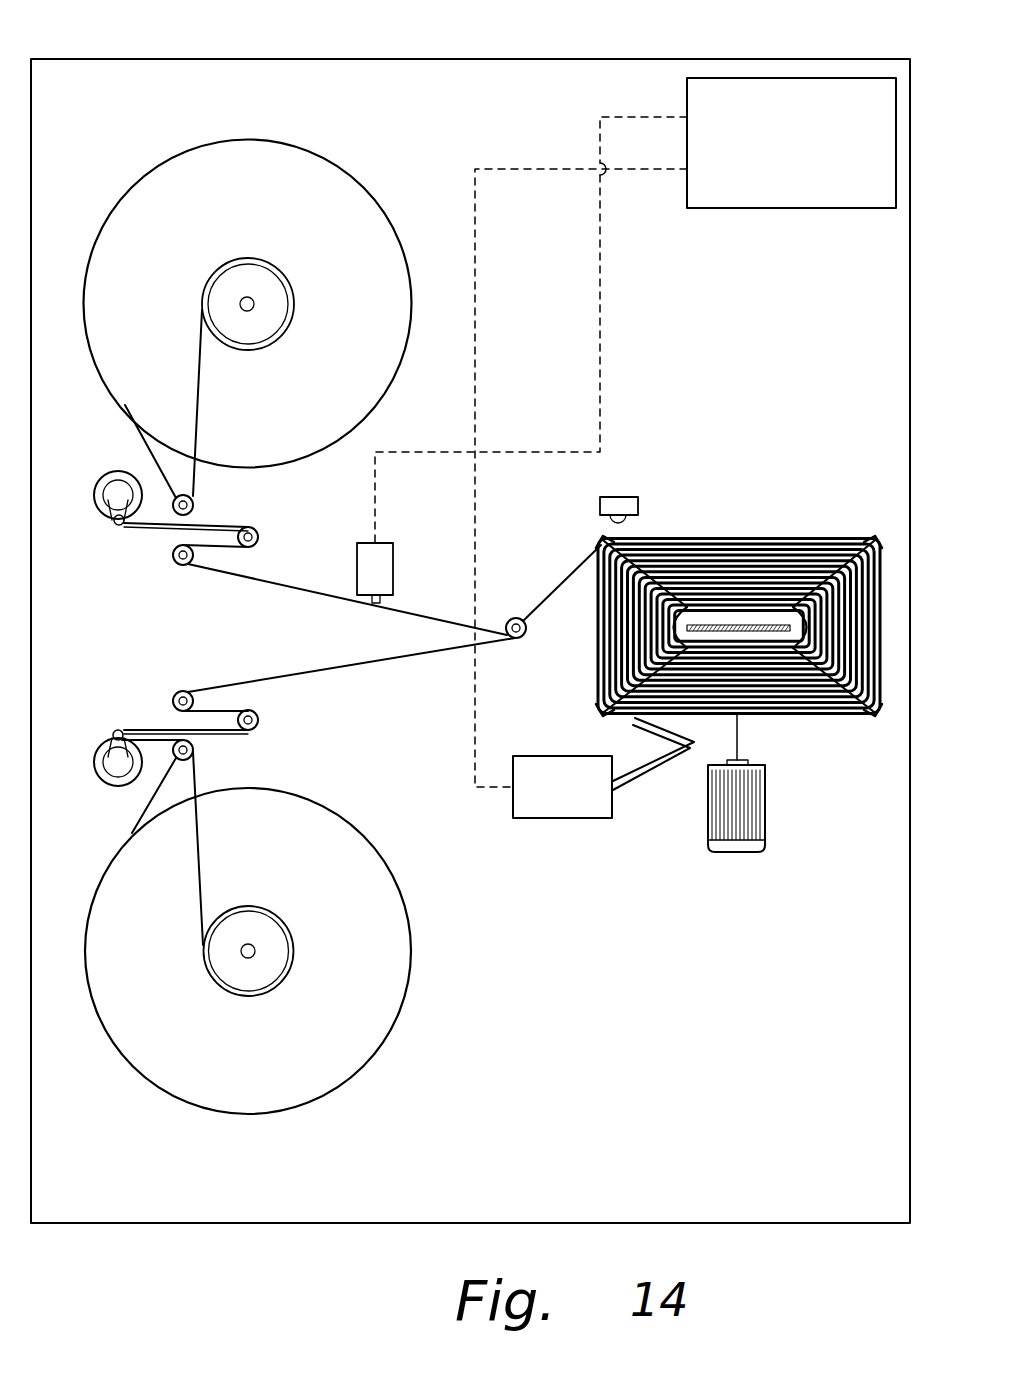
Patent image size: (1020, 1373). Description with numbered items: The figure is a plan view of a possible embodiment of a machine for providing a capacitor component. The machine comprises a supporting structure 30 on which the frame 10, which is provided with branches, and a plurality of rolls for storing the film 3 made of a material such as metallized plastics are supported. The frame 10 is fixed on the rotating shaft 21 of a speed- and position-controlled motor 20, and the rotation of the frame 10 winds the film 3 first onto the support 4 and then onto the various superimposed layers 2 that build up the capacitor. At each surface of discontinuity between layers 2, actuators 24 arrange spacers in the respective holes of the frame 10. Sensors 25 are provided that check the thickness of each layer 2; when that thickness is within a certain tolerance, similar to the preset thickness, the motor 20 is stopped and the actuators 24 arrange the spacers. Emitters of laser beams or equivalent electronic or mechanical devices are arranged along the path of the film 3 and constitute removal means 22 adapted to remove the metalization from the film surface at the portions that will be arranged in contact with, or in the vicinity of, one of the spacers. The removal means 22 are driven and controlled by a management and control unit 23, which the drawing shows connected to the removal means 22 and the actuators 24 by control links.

The supporting structure 30 is at (283, 82).
The film 3 is at (312, 590).
The removal means 22 is at (383, 565).
The sensors 25 is at (618, 500).
The management and control unit 23 is at (790, 183).
The actuators 24 is at (565, 797).
The rotating shaft 21 is at (737, 738).
The motor 20 is at (752, 817).
The frame 10 is at (868, 536).
The layers 2 is at (700, 545).
The support 4 is at (743, 626).